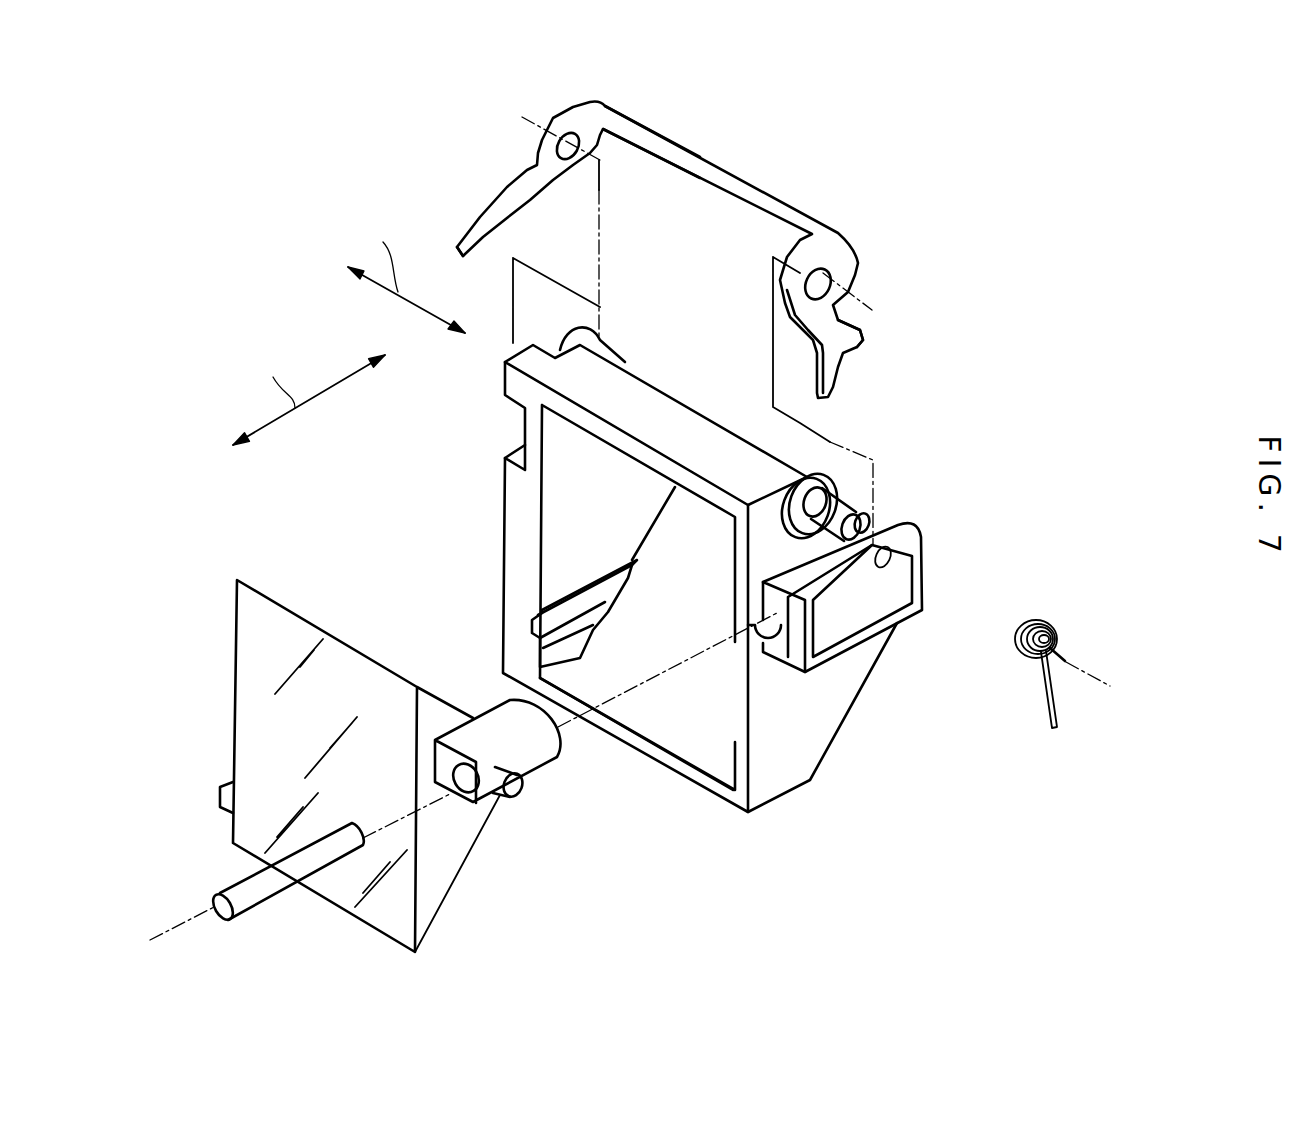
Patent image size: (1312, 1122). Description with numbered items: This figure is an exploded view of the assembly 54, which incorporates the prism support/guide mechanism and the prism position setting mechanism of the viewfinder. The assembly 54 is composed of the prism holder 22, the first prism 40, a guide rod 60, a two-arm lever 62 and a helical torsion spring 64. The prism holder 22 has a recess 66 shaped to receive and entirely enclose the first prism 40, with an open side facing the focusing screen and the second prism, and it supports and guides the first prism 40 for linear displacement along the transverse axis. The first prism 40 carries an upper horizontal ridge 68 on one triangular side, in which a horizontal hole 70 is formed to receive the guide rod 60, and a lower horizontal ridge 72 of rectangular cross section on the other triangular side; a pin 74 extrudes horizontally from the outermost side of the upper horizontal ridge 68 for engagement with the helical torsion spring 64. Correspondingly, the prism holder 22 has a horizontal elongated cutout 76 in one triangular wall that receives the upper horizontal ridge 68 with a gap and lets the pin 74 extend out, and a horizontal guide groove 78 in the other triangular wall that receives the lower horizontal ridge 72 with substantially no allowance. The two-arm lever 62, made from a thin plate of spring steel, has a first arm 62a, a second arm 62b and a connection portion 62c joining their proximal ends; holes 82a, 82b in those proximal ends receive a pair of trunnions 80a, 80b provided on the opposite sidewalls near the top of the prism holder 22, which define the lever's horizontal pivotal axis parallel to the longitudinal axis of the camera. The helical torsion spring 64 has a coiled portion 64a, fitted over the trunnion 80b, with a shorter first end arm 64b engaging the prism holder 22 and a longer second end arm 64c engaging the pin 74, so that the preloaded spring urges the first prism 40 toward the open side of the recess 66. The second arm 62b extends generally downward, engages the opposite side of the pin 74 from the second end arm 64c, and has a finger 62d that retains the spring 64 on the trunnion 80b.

The prism holder 22 is at (700, 527).
The first prism 40 is at (322, 766).
The assembly 54 is at (352, 496).
The guide rod 60 is at (227, 882).
The two-arm lever 62 is at (682, 230).
The first arm 62a is at (492, 203).
The second arm 62b is at (830, 392).
The connection portion 62c is at (733, 172).
The finger 62d is at (859, 330).
The helical torsion spring 64 is at (1065, 641).
The coiled portion 64a is at (1018, 655).
The first end arm 64b is at (1062, 657).
The second end arm 64c is at (1057, 720).
The recess 66 is at (710, 710).
The upper horizontal ridge 68 is at (522, 801).
The horizontal hole 70 is at (463, 780).
The lower horizontal ridge 72 is at (220, 790).
The pin 74 is at (520, 793).
The cutout 76 is at (775, 640).
The guide groove 78 is at (537, 635).
The trunnion 80a is at (565, 338).
The trunnion 80b is at (842, 520).
The hole 82a is at (575, 138).
The hole 82b is at (826, 283).